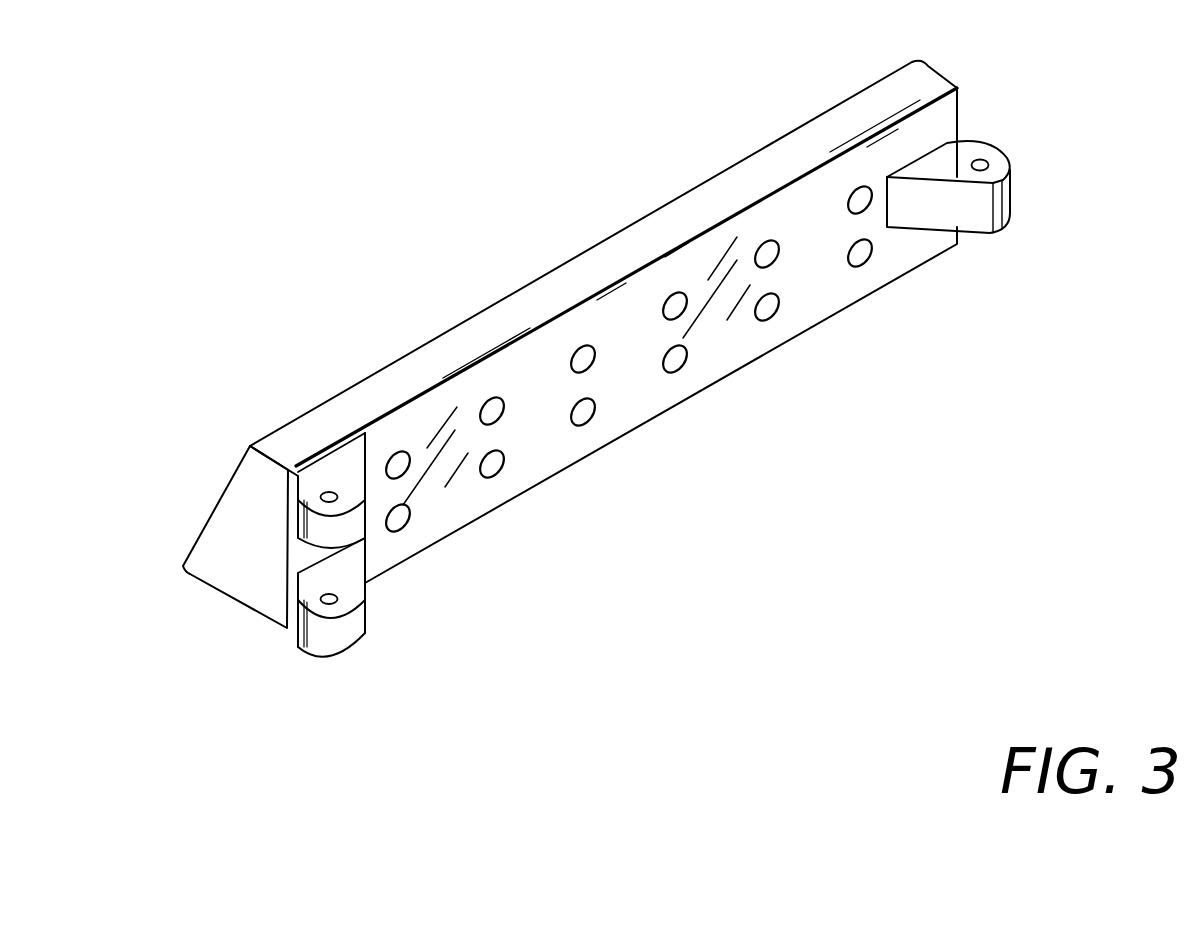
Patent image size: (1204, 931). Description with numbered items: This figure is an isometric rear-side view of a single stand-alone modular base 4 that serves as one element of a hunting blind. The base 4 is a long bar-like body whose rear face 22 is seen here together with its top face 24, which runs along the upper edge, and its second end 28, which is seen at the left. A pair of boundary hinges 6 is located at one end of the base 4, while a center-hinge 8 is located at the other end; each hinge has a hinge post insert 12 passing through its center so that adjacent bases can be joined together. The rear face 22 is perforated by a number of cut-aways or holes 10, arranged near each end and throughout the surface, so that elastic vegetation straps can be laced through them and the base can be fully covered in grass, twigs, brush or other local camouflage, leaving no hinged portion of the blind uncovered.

The modular base 4 is at (398, 206).
The boundary hinges 6 is at (315, 627).
The center-hinge 8 is at (1010, 167).
The holes 10 is at (590, 360).
The hinge post insert 12 is at (328, 497).
The rear face 22 is at (831, 229).
The top face 24 is at (756, 202).
The second end 28 is at (273, 514).